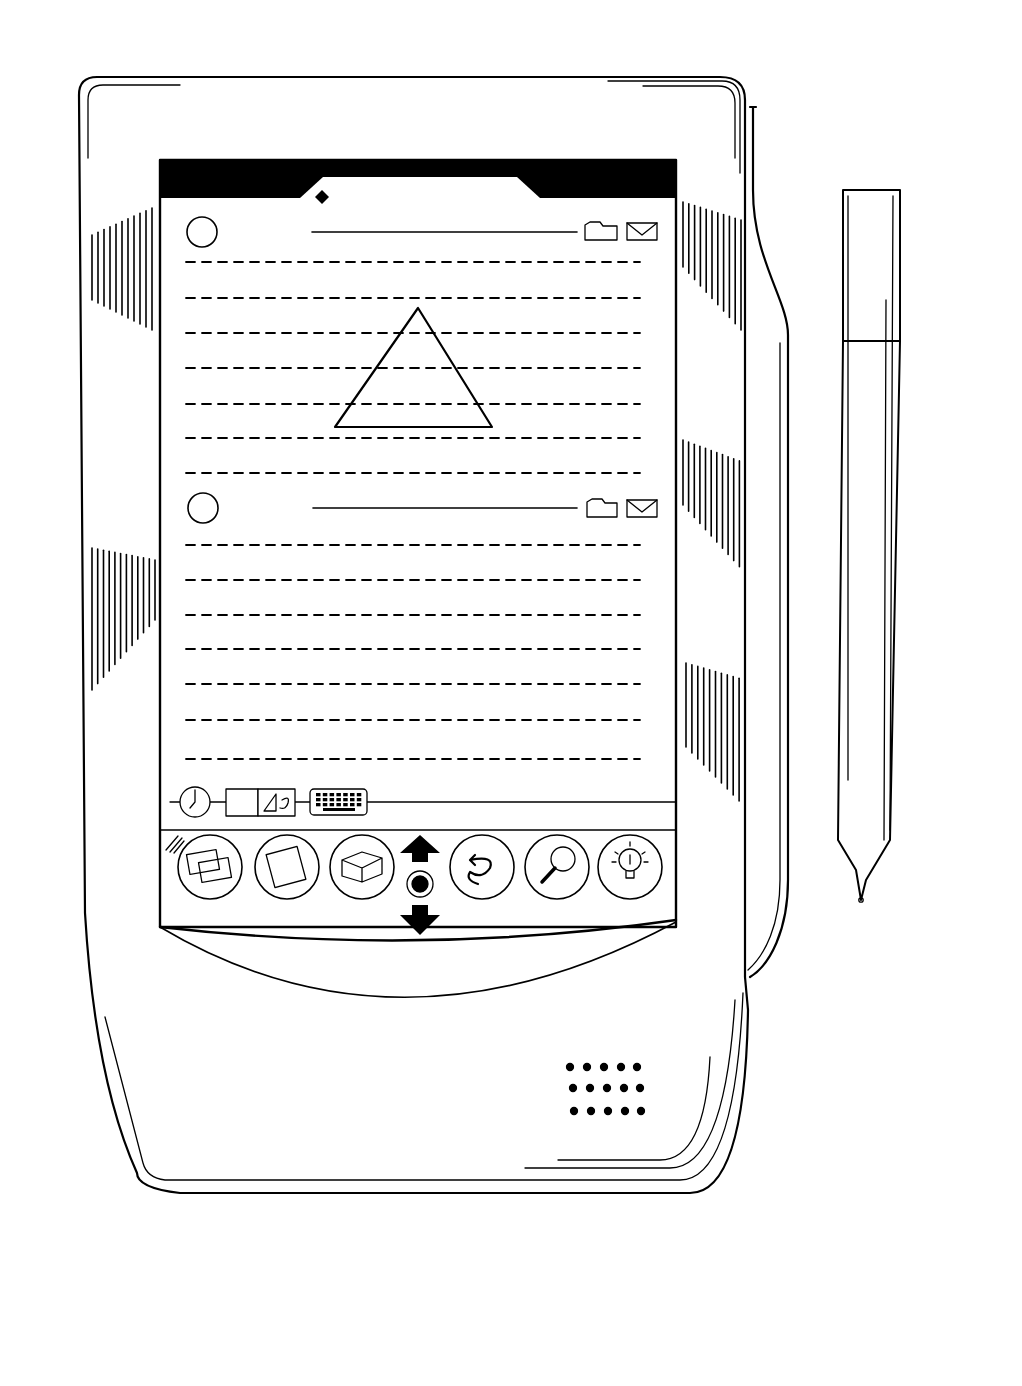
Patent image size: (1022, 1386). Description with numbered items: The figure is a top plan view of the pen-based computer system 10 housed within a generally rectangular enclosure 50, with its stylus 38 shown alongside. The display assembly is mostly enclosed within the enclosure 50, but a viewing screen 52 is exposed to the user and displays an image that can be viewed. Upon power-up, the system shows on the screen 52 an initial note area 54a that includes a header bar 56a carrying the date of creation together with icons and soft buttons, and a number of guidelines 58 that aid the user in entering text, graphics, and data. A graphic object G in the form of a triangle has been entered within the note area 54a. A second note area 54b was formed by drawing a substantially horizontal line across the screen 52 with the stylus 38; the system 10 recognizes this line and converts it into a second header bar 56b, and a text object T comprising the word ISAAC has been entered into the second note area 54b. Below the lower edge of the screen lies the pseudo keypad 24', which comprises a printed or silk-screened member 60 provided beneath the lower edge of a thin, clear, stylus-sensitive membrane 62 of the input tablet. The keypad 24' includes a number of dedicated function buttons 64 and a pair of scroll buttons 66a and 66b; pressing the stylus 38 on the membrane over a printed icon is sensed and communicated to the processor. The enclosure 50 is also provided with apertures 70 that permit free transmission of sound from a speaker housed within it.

The pen-based computer system 10 is at (122, 50).
The pseudo keypad 24' is at (499, 567).
The stylus 38 is at (876, 205).
The enclosure 50 is at (98, 967).
The viewing screen 52 is at (183, 692).
The initial note area 54a is at (585, 396).
The second note area 54b is at (590, 645).
The header bar 56a is at (482, 232).
The second header bar 56b is at (462, 508).
The guidelines 58 is at (278, 368).
The printed or silk-screened member 60 is at (163, 896).
The stylus-sensitive membrane 62 is at (166, 840).
The dedicated function buttons 64 is at (622, 842).
The scroll button 66a is at (416, 832).
The scroll button 66b is at (427, 932).
The apertures 70 is at (655, 1090).
The graphic object G is at (455, 350).
The text object T is at (338, 614).